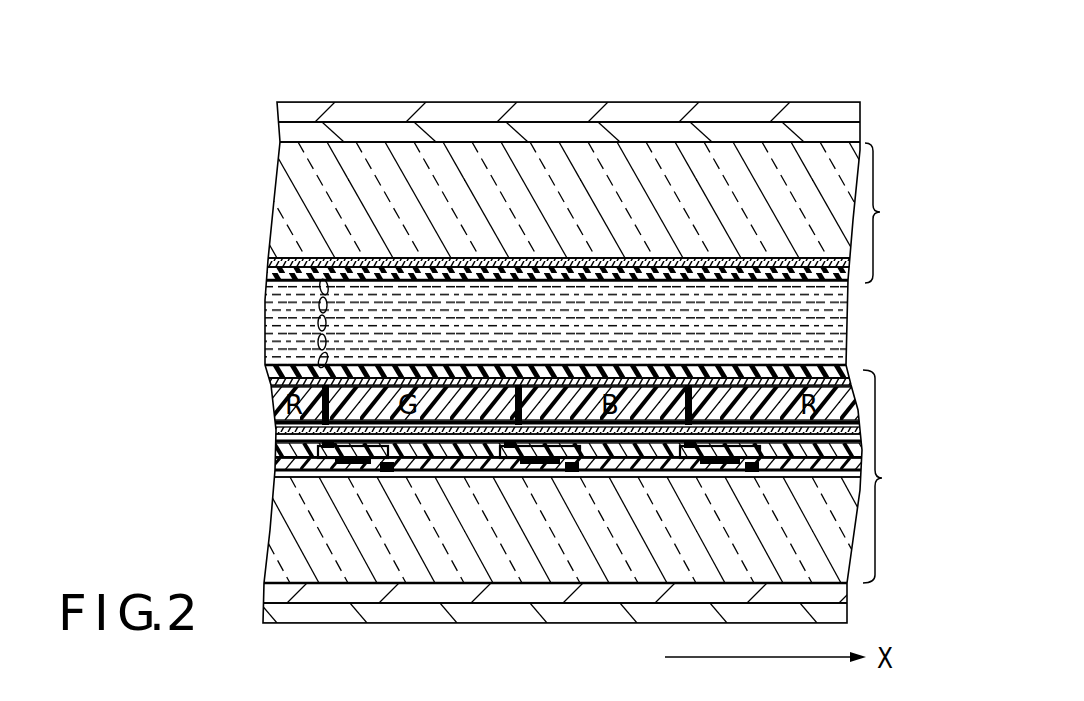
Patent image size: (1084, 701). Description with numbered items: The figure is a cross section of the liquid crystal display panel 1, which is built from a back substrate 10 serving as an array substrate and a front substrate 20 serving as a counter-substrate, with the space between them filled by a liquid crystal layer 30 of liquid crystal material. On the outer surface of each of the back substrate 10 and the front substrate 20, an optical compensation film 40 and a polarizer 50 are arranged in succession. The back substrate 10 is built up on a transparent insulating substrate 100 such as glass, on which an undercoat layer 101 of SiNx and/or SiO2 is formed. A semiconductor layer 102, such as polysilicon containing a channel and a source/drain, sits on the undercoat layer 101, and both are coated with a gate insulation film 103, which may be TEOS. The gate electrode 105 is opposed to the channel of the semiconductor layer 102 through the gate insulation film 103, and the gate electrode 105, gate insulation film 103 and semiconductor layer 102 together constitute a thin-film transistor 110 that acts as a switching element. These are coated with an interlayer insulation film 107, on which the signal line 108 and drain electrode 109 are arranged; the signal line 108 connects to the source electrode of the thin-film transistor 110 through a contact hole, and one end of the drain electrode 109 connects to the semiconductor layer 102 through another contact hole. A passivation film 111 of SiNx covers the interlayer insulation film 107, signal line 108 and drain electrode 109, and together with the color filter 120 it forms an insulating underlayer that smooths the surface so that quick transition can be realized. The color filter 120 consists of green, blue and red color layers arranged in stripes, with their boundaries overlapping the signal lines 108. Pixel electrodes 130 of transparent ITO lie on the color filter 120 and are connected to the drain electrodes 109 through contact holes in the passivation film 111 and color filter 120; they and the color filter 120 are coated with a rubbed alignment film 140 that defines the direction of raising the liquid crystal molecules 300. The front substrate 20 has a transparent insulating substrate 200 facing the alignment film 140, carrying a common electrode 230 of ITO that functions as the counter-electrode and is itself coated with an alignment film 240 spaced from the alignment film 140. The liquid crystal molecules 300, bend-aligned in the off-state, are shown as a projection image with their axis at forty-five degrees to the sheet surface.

The liquid crystal display panel 1 is at (808, 92).
The back substrate 10 is at (888, 476).
The front substrate 20 is at (890, 213).
The liquid crystal layer 30 is at (845, 327).
The optical compensation film 40 is at (850, 133).
The polarizer 50 is at (850, 113).
The transparent insulating substrate 100 is at (272, 560).
The undercoat layer 101 is at (285, 474).
The semiconductor layer 102 is at (525, 478).
The gate insulation film 103 is at (427, 478).
The gate electrode 105 is at (622, 472).
The interlayer insulation film 107 is at (285, 447).
The signal line 108 is at (523, 383).
The drain electrode 109 is at (620, 387).
The thin-film transistor 110 is at (538, 486).
The passivation film 111 is at (280, 428).
The color filter 120 is at (743, 393).
The pixel electrode 130 is at (467, 383).
The alignment film 140 is at (675, 370).
The transparent insulating substrate 200 is at (285, 167).
The common electrode 230 is at (386, 275).
The alignment film 240 is at (332, 262).
The liquid crystal molecules 300 is at (318, 305).